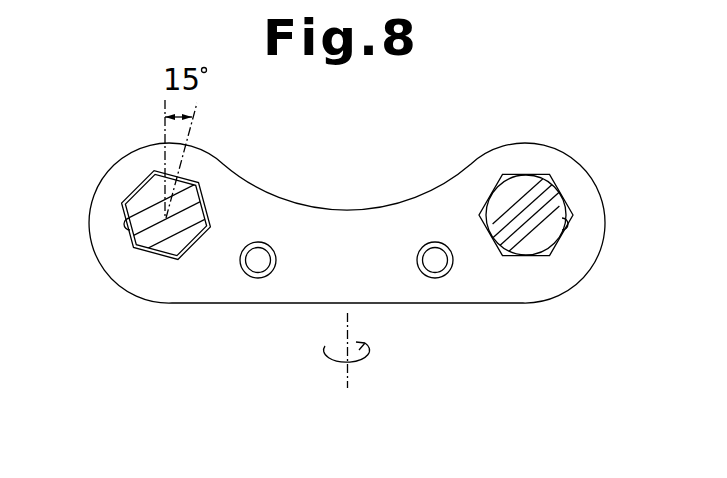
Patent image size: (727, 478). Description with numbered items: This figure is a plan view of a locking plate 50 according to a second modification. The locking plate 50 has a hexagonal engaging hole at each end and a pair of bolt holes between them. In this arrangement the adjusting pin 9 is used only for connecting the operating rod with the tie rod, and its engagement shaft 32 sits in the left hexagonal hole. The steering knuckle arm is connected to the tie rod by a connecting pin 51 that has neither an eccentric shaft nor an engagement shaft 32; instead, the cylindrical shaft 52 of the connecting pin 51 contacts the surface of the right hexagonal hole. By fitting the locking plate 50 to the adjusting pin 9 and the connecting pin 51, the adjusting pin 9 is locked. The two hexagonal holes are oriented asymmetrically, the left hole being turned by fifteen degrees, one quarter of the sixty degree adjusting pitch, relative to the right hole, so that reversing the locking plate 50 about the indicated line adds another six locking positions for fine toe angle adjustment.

The adjusting pin 9 is at (147, 196).
The engagement shaft 32 is at (142, 248).
The locking plate 50 is at (348, 206).
The connecting pin 51 is at (545, 198).
The cylindrical shaft 52 is at (542, 243).